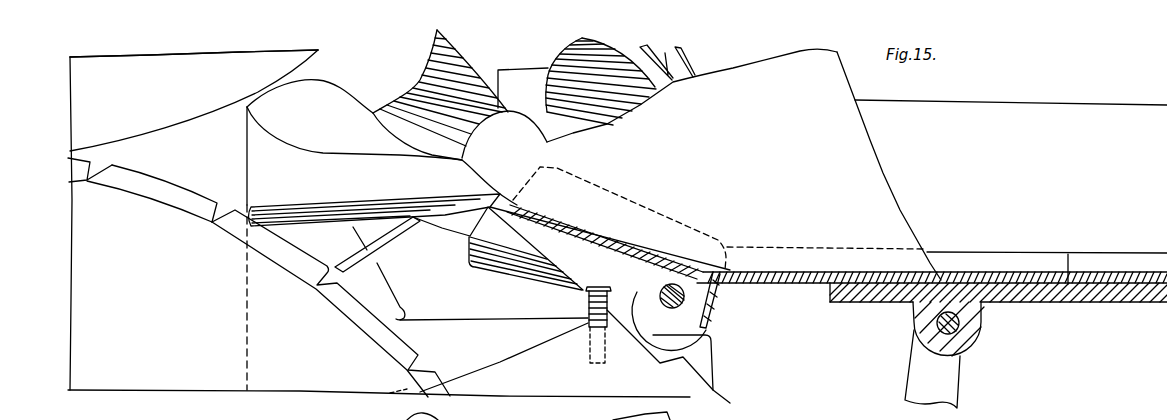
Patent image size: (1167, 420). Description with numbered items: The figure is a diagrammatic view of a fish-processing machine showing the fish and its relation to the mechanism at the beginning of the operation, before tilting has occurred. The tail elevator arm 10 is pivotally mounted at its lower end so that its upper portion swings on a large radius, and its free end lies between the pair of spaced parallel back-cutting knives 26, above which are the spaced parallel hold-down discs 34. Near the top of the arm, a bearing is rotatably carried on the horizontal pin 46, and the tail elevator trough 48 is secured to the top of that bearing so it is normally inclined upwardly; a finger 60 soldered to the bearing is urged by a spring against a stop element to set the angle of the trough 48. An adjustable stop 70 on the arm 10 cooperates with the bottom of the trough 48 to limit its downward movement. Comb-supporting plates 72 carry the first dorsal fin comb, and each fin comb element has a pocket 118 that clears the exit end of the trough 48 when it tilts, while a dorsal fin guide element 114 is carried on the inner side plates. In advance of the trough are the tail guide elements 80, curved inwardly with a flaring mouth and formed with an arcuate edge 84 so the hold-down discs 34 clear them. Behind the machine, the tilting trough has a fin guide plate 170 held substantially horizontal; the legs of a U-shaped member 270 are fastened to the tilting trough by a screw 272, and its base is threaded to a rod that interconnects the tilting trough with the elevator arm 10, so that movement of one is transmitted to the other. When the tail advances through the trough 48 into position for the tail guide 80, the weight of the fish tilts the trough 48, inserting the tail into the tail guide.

The tail elevator arm 10 is at (718, 393).
The back-cutting knives 26 is at (198, 200).
The hold-down discs 34 is at (255, 62).
The horizontal pin 46 is at (660, 290).
The tail elevator trough 48 is at (690, 223).
The finger 60 is at (713, 312).
The adjustable stop 70 is at (588, 305).
The comb-supporting plates 72 is at (469, 236).
The tail guide elements 80 is at (248, 135).
The arcuate edge 84 is at (258, 103).
The dorsal fin guide element 114 is at (377, 287).
The pocket 118 is at (508, 268).
The fin guide plate 170 is at (1105, 303).
The U-shaped member 270 is at (950, 388).
The screw 272 is at (979, 322).